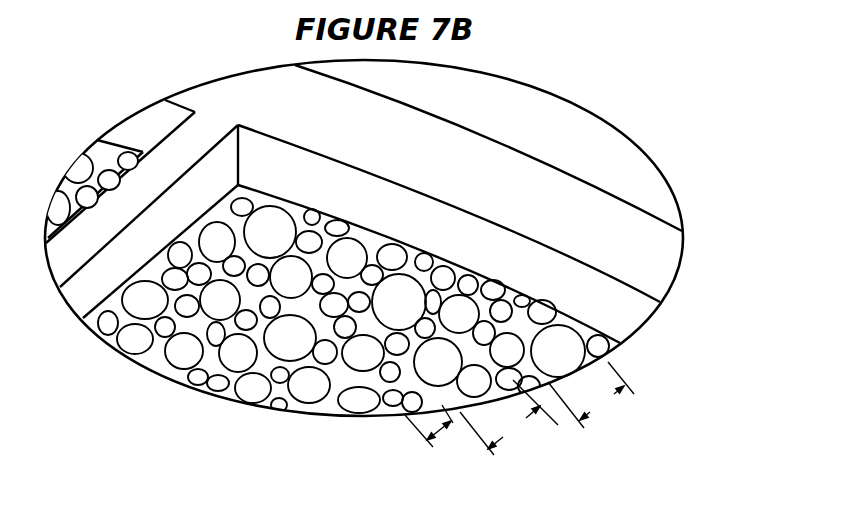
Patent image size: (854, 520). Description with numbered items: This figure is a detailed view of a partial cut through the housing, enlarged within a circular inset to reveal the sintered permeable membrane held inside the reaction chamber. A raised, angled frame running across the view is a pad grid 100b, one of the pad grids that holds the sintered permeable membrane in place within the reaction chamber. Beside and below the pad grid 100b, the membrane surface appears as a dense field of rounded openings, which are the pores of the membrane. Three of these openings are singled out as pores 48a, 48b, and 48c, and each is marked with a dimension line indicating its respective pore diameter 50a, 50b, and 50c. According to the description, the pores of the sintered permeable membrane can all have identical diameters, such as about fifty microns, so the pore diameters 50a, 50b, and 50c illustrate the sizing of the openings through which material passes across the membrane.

The pad grid 100b is at (625, 235).
The pore 48a is at (412, 401).
The pore 48b is at (478, 394).
The pore 48c is at (557, 352).
The pore diameter 50a is at (427, 440).
The pore diameter 50b is at (509, 417).
The pore diameter 50c is at (591, 395).